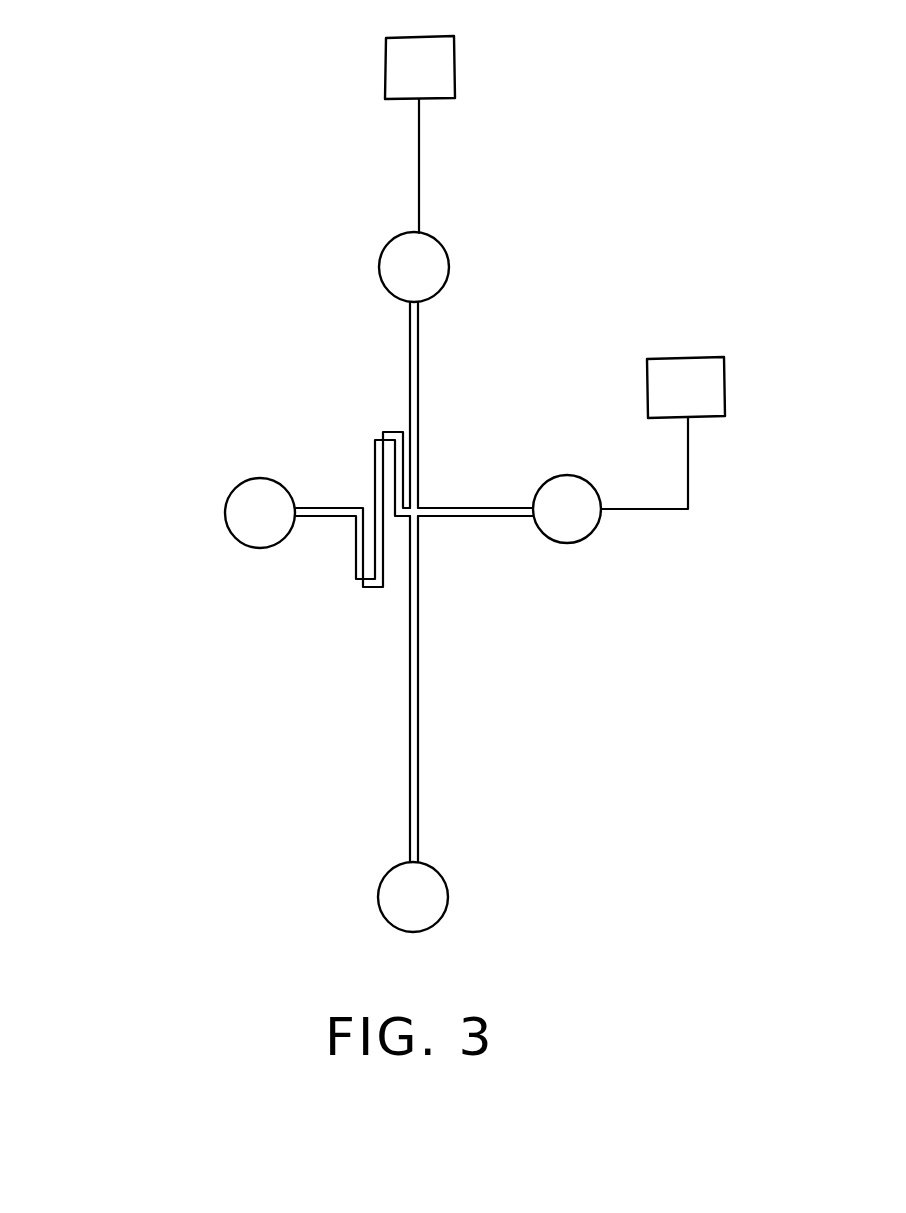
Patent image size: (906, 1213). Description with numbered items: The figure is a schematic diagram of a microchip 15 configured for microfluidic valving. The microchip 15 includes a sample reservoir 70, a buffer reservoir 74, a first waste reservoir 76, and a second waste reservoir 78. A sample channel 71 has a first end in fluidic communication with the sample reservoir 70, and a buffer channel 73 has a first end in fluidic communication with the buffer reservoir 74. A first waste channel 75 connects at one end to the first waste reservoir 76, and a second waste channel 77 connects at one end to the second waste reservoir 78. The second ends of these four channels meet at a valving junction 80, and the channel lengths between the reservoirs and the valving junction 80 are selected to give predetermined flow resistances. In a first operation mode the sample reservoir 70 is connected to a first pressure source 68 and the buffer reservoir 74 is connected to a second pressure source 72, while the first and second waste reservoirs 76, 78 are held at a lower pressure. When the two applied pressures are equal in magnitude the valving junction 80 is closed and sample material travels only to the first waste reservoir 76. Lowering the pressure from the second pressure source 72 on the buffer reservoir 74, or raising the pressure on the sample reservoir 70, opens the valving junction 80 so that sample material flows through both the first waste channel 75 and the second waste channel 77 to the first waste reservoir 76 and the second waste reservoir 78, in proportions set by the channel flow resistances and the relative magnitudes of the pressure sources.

The microchip 15 is at (118, 564).
The first pressure source 68 is at (455, 70).
The sample reservoir 70 is at (383, 247).
The sample channel 71 is at (413, 382).
The second pressure source 72 is at (715, 380).
The buffer channel 73 is at (465, 508).
The buffer reservoir 74 is at (590, 538).
The first waste channel 75 is at (353, 563).
The first waste reservoir 76 is at (245, 478).
The second waste channel 77 is at (408, 764).
The second waste reservoir 78 is at (450, 893).
The valving junction 80 is at (418, 517).